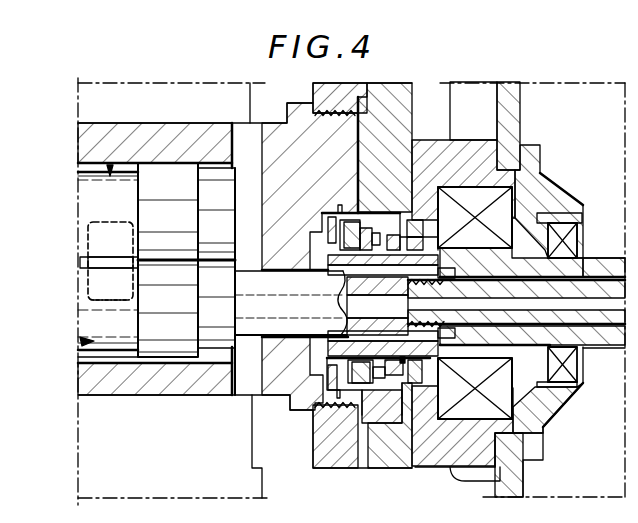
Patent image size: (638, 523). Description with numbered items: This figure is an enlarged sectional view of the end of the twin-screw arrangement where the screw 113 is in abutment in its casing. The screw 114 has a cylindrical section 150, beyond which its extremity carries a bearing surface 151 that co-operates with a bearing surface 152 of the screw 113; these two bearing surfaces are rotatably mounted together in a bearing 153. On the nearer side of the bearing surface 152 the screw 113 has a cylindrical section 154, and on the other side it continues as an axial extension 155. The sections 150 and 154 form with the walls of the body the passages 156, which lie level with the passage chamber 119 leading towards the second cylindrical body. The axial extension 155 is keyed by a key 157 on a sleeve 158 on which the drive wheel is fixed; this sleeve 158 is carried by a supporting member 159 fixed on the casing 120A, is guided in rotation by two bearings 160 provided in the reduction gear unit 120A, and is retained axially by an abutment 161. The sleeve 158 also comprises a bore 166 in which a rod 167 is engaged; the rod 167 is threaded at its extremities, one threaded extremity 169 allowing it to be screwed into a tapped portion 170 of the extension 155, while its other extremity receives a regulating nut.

The screw 113 is at (82, 342).
The screw 114 is at (110, 170).
The passage chamber 119 is at (83, 233).
The casing 120A is at (520, 98).
The cylindrical section 150 is at (125, 193).
The bearing surface 151 is at (180, 178).
The bearing surface 152 is at (157, 350).
The bearing 153 is at (213, 383).
The cylindrical section 154 is at (88, 295).
The axial extension 155 is at (300, 326).
The passages 156 is at (85, 172).
The key 157 is at (338, 275).
The sleeve 158 is at (522, 240).
The supporting member 159 is at (440, 150).
The bearing 160 is at (580, 388).
The abutment 161 is at (463, 413).
The bore 166 is at (568, 228).
The rod 167 is at (610, 270).
The threaded extremity 169 is at (432, 285).
The tapped portion 170 is at (415, 437).